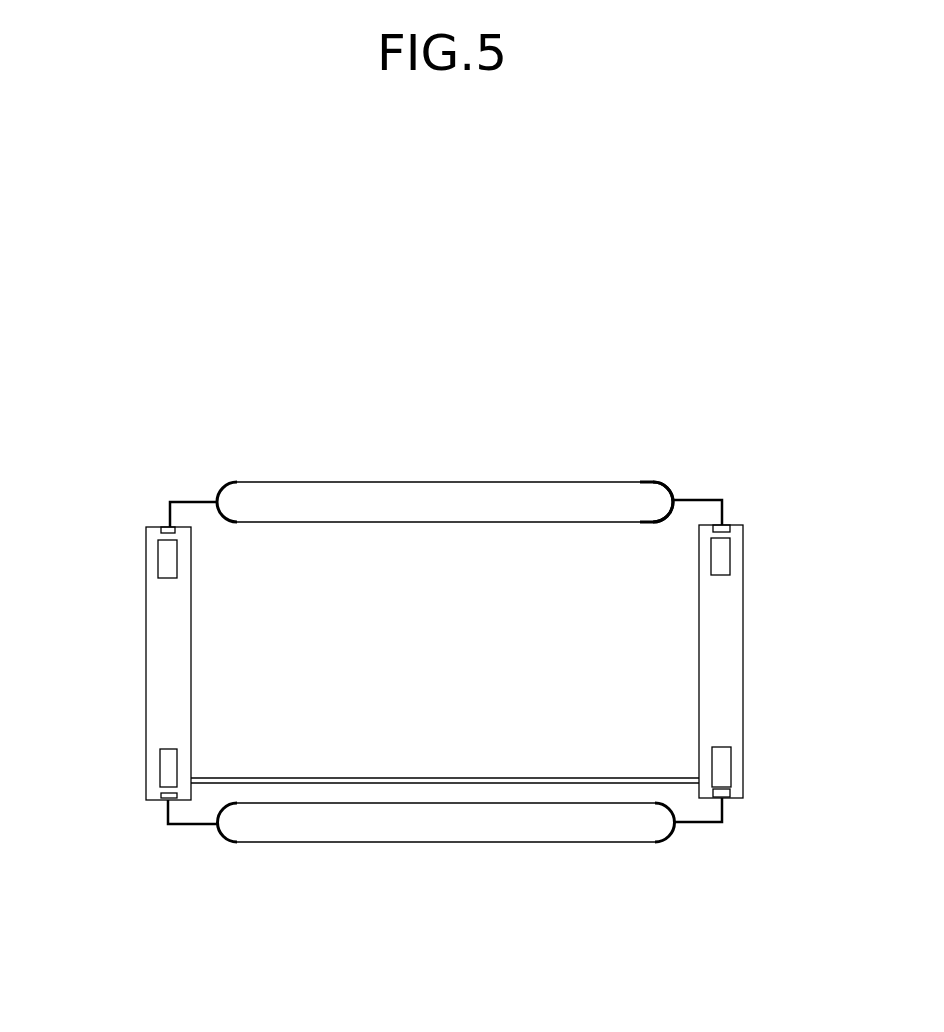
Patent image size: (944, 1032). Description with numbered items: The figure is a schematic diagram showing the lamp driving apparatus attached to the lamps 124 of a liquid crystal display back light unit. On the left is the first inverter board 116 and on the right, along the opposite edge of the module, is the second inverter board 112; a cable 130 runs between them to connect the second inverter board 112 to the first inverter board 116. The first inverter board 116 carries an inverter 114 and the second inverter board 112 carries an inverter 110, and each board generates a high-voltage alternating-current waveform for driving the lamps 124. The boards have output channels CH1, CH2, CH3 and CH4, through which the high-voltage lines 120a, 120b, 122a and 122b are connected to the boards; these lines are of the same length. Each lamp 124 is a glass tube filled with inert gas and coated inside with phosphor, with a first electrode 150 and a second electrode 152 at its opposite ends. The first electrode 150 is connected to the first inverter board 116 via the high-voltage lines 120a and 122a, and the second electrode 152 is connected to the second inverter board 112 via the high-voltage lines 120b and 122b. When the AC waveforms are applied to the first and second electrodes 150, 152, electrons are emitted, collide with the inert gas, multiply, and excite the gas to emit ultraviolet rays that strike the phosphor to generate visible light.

The inverter 110 is at (725, 555).
The second inverter board 112 is at (743, 660).
The inverter 114 is at (160, 558).
The first inverter board 116 is at (146, 663).
The high-voltage line 120a is at (170, 502).
The high-voltage line 120b is at (722, 500).
The high-voltage line 122a is at (170, 824).
The high-voltage line 122b is at (700, 822).
The lamp 124 is at (465, 832).
The cable 130 is at (432, 777).
The first electrode 150 is at (230, 483).
The second electrode 152 is at (650, 482).
The output channel CH1 is at (162, 531).
The output channel CH2 is at (728, 532).
The output channel CH3 is at (162, 794).
The output channel CH4 is at (728, 792).